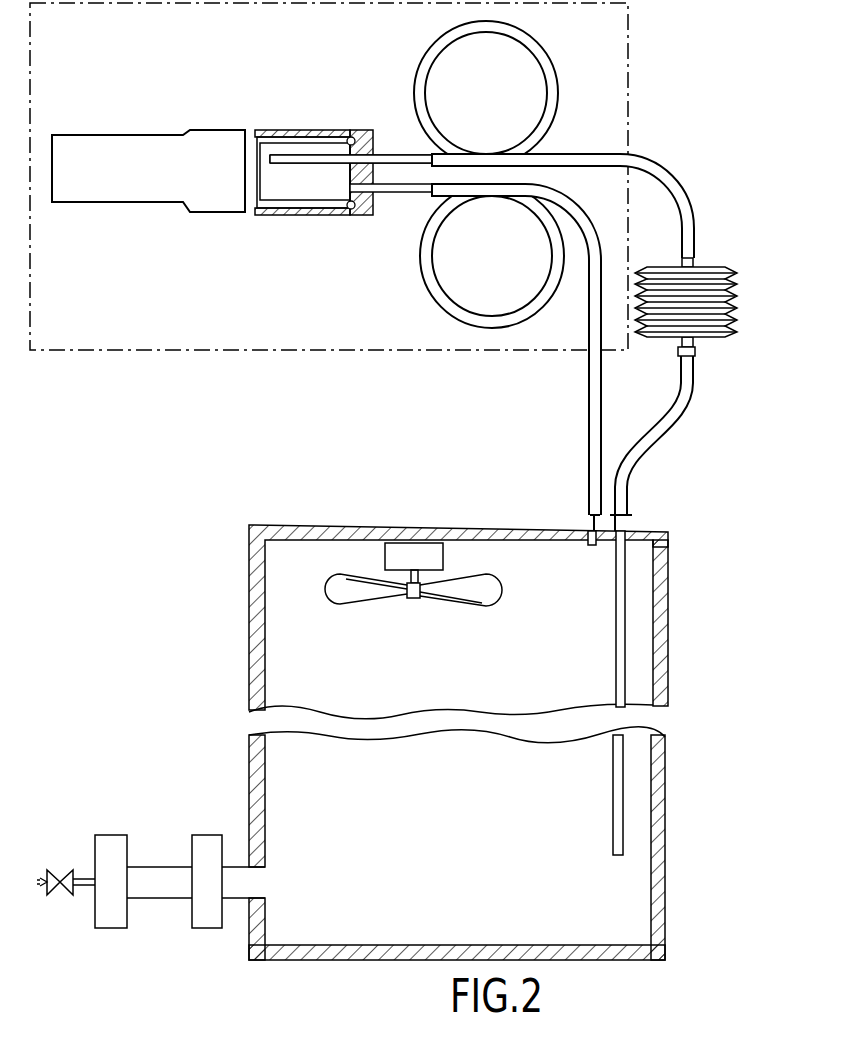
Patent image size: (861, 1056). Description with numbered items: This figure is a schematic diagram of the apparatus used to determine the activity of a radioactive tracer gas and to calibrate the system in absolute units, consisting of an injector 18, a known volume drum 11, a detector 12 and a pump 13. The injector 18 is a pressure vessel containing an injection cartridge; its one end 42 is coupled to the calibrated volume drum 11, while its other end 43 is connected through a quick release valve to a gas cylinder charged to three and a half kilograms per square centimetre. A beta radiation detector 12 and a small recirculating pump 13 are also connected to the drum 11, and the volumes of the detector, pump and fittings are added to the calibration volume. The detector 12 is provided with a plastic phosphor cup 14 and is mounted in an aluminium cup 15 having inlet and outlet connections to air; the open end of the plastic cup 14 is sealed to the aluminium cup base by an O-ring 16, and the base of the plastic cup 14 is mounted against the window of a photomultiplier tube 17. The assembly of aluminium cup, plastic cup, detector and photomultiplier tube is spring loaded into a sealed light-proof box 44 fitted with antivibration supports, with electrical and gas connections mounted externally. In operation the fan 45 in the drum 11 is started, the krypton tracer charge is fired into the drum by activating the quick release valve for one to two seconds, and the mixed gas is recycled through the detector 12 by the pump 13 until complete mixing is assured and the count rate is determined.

The known volume drum 11 is at (340, 961).
The detector 12 is at (273, 118).
The pump 13 is at (726, 268).
The plastic phosphor cup 14 is at (254, 204).
The aluminium cup 15 is at (363, 214).
The O-ring 16 is at (351, 136).
The photomultiplier tube 17 is at (215, 138).
The injector 18 is at (171, 899).
The one end 42 is at (251, 866).
The other end 43 is at (93, 877).
The sealed light-proof box 44 is at (488, 353).
The fan 45 is at (486, 598).